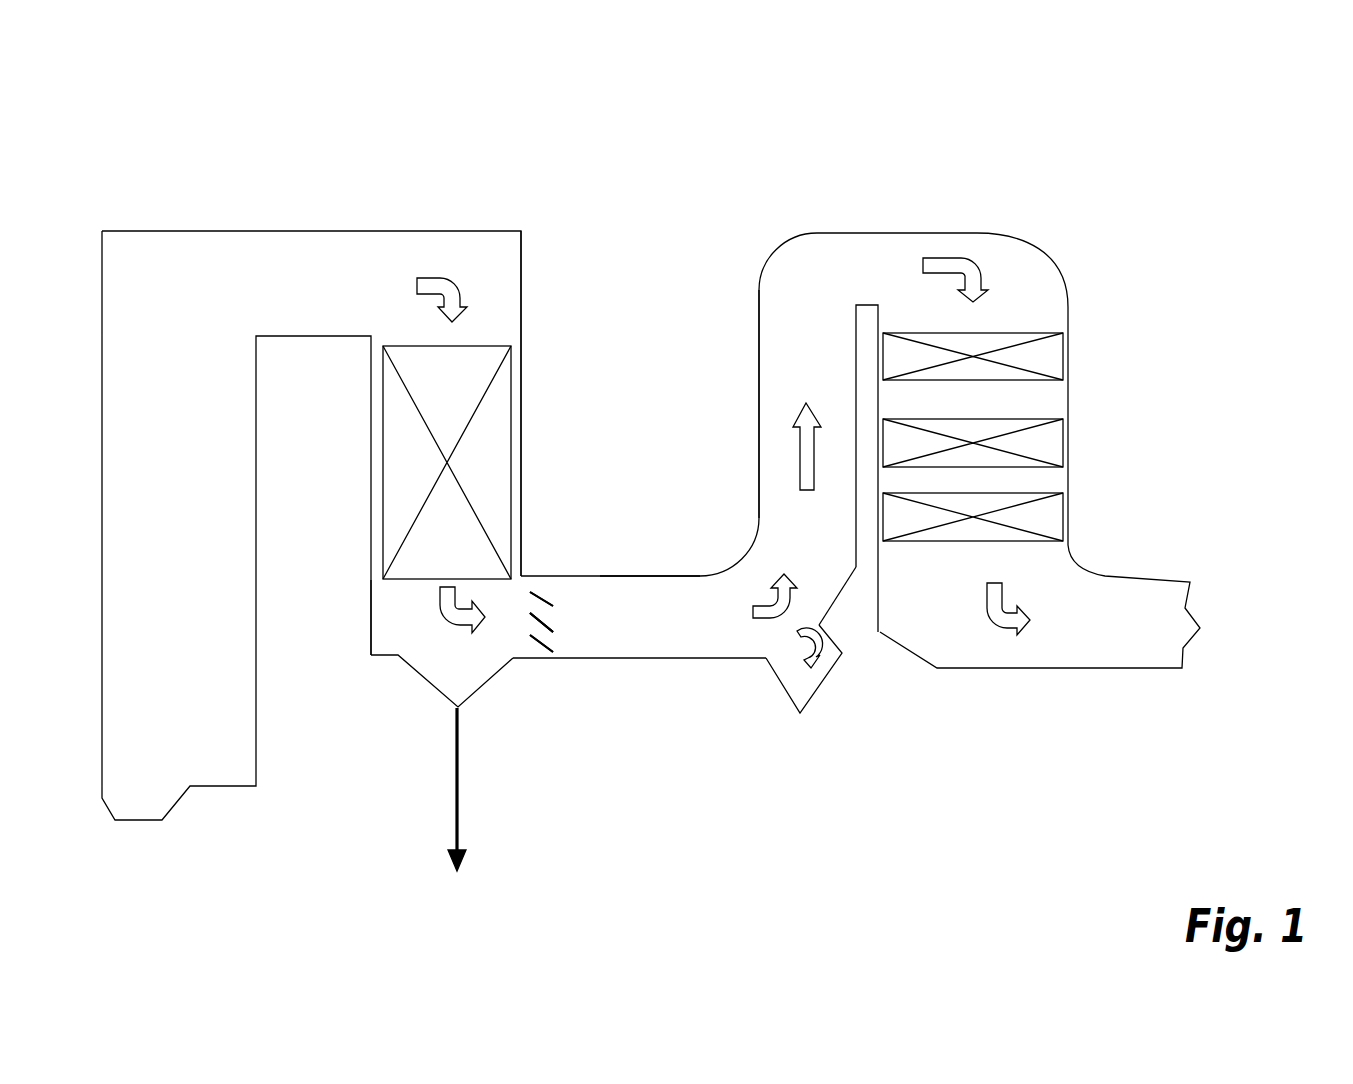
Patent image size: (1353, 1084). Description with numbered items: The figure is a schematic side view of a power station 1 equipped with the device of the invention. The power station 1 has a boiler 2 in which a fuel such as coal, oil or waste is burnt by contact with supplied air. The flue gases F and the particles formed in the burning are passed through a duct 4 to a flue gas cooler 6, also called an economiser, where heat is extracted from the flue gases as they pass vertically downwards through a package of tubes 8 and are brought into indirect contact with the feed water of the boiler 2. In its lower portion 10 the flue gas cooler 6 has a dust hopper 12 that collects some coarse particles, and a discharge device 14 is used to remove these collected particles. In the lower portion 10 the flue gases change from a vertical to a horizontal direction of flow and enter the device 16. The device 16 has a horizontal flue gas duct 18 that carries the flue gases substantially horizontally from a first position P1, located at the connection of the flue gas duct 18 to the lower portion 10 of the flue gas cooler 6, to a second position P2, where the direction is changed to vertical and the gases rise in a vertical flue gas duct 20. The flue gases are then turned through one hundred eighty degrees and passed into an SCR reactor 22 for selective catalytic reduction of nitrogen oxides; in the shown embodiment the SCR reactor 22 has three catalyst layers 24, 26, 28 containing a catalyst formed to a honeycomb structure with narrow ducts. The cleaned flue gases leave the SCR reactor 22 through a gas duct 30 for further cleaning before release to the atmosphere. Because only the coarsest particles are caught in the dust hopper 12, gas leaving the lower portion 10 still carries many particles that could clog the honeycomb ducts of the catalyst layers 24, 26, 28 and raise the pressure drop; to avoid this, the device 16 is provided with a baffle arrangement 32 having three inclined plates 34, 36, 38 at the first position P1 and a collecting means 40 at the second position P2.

The power station 1 is at (638, 140).
The boiler 2 is at (255, 698).
The duct 4 is at (328, 230).
The flue gas cooler 6 is at (522, 453).
The package of tubes 8 is at (500, 398).
The lower portion 10 is at (368, 623).
The dust hopper 12 is at (427, 682).
The discharge device 14 is at (460, 805).
The device 16 is at (634, 562).
The horizontal flue gas duct 18 is at (680, 573).
The vertical flue gas duct 20 is at (758, 365).
The SCR reactor 22 is at (1085, 398).
The catalyst layer 24 is at (1052, 357).
The catalyst layer 26 is at (1055, 445).
The catalyst layer 28 is at (1058, 513).
The gas duct 30 is at (1143, 670).
The baffle arrangement 32 is at (578, 619).
The inclined plate 34 is at (542, 602).
The inclined plate 36 is at (560, 607).
The inclined plate 38 is at (540, 655).
The collecting means 40 is at (827, 677).
The flue gases F is at (450, 280).
The first position P1 is at (560, 615).
The second position P2 is at (770, 632).